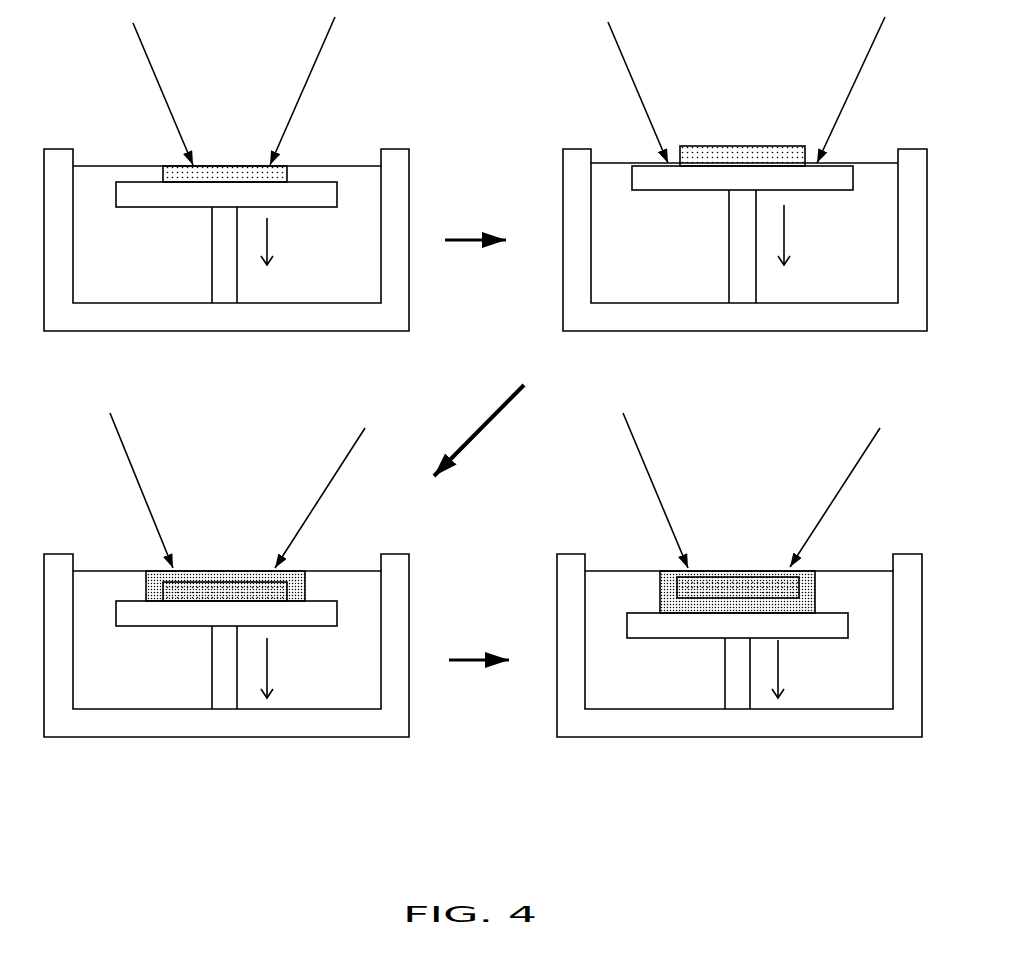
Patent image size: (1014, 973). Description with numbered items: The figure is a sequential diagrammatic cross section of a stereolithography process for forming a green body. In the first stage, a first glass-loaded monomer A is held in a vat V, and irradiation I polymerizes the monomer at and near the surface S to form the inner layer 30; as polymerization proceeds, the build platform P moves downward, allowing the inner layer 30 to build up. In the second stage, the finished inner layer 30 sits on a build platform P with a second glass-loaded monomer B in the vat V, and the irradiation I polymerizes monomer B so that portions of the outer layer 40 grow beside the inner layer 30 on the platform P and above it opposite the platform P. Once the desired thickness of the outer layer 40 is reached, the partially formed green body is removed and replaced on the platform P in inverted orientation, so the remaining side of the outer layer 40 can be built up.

The inner layer 30 is at (220, 173).
The outer layer 40 is at (200, 577).
The surface S is at (100, 165).
The build platform P is at (308, 190).
The first glass-loaded monomer A is at (97, 258).
The second glass-loaded monomer B is at (613, 257).
The vat V is at (78, 318).
The irradiation I is at (302, 83).